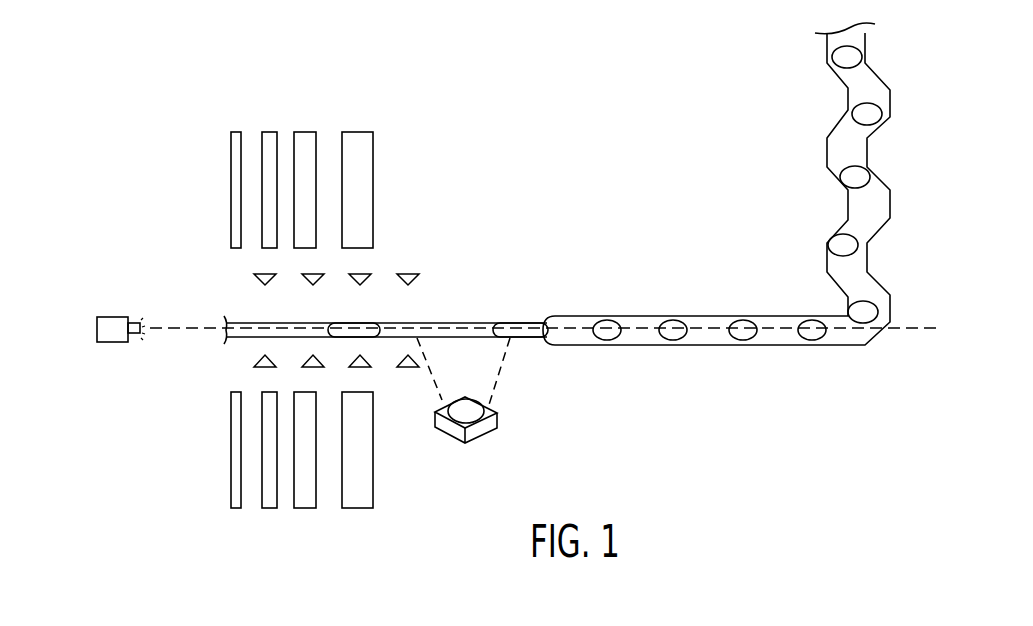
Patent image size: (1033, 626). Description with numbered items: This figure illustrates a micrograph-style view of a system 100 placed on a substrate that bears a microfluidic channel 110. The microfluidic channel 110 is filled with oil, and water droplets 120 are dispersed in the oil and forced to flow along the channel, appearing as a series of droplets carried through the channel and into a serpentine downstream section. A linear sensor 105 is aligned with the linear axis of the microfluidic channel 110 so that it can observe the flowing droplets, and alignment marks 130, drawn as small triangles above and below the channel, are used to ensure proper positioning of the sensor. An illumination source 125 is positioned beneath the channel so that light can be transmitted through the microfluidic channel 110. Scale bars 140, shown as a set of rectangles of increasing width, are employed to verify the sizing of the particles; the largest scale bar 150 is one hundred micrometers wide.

The system 100 is at (236, 85).
The linear sensor 105 is at (97, 328).
The microfluidic channel 110 is at (226, 329).
The water droplets 120 is at (868, 312).
The illumination source 125 is at (497, 426).
The alignment marks 130 is at (260, 359).
The scale bars 140 is at (208, 451).
The largest scale bar 150 is at (358, 510).